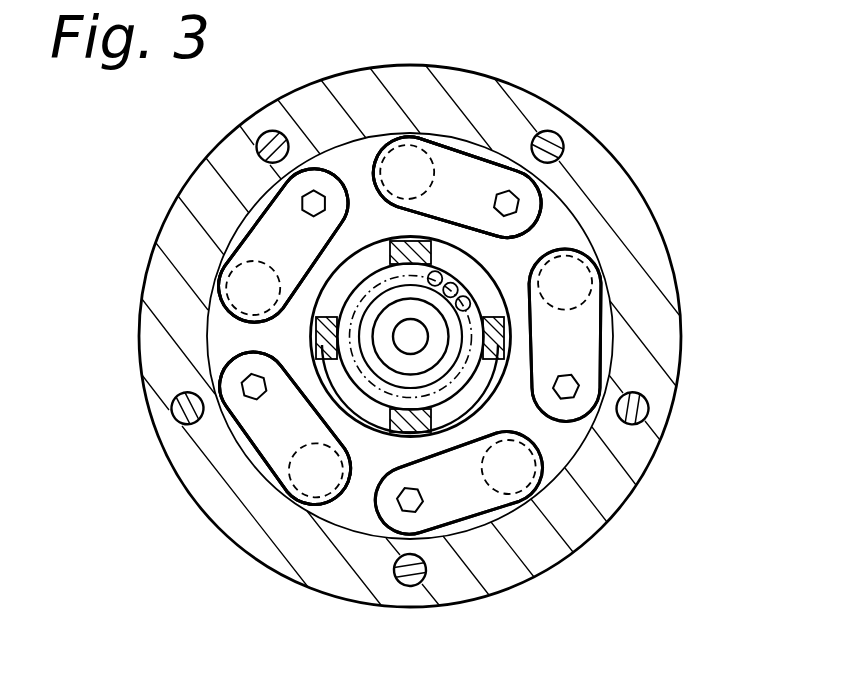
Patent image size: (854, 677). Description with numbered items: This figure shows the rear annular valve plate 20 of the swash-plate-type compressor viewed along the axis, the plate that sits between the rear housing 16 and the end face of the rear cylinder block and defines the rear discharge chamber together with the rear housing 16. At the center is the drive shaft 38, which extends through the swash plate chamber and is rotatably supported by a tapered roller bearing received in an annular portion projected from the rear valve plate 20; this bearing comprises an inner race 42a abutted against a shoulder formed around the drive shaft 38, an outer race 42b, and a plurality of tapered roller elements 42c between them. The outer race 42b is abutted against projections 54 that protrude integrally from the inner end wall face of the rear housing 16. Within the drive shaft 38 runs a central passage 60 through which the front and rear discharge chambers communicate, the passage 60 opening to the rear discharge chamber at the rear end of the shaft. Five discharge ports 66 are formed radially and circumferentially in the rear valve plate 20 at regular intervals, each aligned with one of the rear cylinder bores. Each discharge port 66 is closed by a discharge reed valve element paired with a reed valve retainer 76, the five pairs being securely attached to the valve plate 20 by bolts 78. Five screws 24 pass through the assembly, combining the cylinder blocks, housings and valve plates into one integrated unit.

The rear housing 16 is at (650, 197).
The rear annular valve plate 20 is at (616, 484).
The screws 24 is at (264, 133).
The drive shaft 38 is at (433, 353).
The inner race 42a is at (306, 565).
The outer race 42b is at (219, 276).
The tapered roller elements 42c is at (470, 280).
The projections 54 is at (333, 234).
The central passage 60 is at (400, 338).
The discharge ports 66 is at (237, 262).
The reed valve retainers 76 is at (266, 212).
The bolts 78 is at (312, 190).